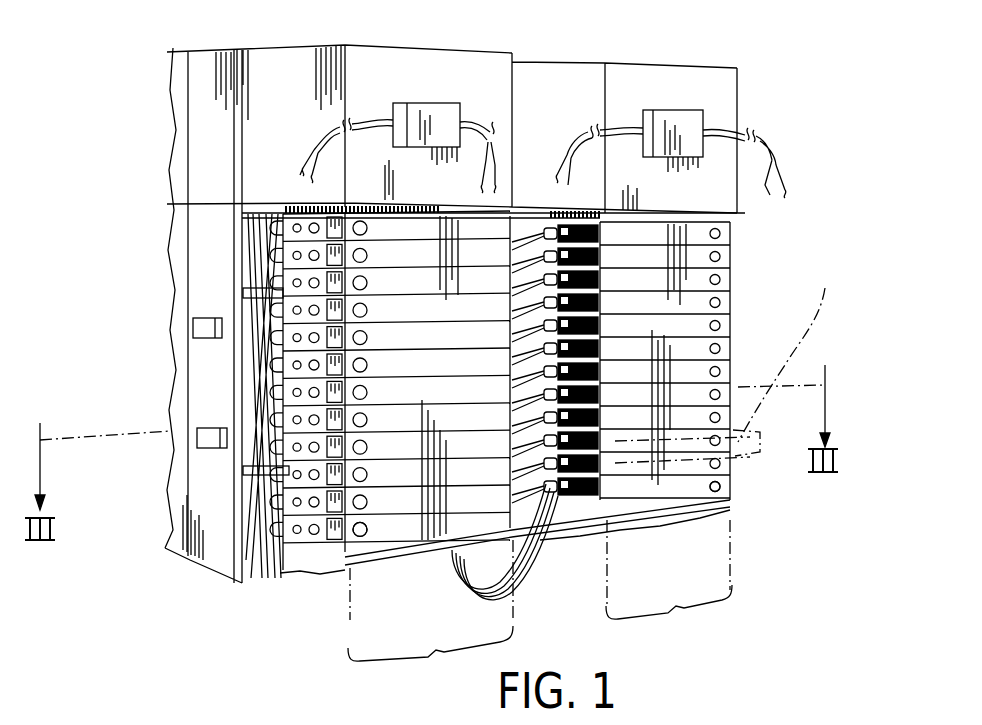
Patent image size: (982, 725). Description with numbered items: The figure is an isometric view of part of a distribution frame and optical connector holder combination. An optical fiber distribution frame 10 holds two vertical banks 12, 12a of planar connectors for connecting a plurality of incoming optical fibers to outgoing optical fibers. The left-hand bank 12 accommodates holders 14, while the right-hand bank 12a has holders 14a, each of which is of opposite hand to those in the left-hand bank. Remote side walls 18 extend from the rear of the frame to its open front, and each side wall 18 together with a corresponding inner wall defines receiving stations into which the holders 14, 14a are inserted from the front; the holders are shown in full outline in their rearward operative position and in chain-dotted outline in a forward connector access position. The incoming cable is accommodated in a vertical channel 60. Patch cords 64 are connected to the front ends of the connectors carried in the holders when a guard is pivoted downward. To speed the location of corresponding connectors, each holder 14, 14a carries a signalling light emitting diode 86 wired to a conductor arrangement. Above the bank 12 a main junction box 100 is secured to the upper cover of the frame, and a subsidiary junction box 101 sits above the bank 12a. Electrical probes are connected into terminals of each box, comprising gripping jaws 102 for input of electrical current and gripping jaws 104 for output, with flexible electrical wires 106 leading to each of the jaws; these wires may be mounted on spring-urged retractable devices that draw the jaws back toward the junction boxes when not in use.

The optical fiber distribution frame 10 is at (135, 407).
The left-hand bank 12 is at (429, 615).
The right-hand bank 12a is at (622, 577).
The holder 14 is at (382, 260).
The holder 14a is at (733, 298).
The side wall 18 is at (168, 352).
The vertical channel 60 is at (200, 473).
The patch cord 64 is at (458, 575).
The light emitting diode 86 is at (365, 535).
The main junction box 100 is at (424, 107).
The subsidiary junction box 101 is at (676, 118).
The gripping jaws 102 is at (306, 150).
The gripping jaws 104 is at (480, 175).
The flexible electrical wires 106 is at (393, 120).